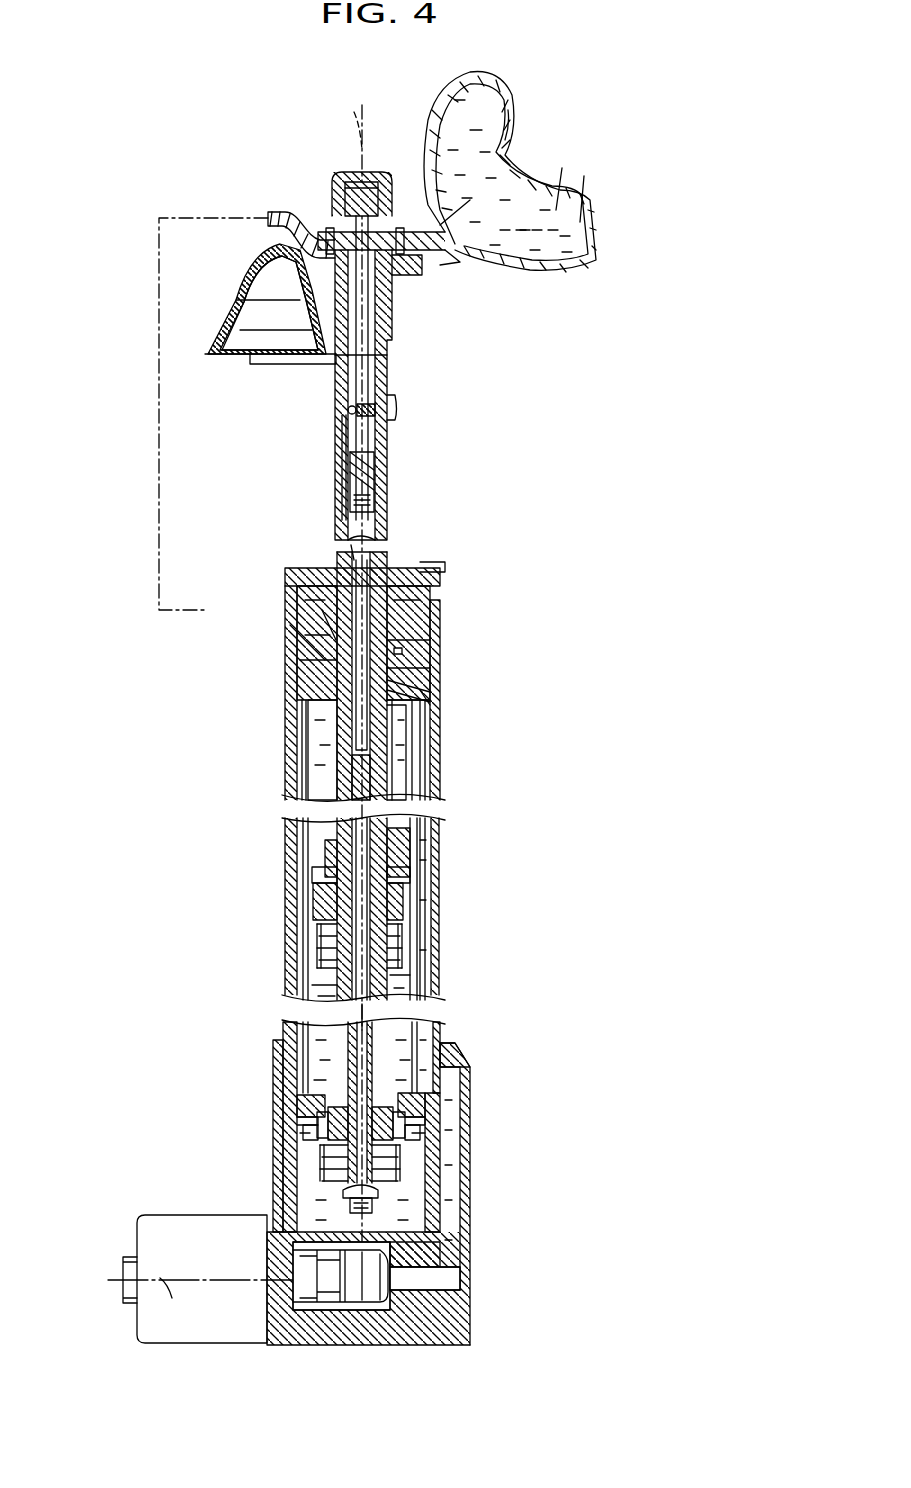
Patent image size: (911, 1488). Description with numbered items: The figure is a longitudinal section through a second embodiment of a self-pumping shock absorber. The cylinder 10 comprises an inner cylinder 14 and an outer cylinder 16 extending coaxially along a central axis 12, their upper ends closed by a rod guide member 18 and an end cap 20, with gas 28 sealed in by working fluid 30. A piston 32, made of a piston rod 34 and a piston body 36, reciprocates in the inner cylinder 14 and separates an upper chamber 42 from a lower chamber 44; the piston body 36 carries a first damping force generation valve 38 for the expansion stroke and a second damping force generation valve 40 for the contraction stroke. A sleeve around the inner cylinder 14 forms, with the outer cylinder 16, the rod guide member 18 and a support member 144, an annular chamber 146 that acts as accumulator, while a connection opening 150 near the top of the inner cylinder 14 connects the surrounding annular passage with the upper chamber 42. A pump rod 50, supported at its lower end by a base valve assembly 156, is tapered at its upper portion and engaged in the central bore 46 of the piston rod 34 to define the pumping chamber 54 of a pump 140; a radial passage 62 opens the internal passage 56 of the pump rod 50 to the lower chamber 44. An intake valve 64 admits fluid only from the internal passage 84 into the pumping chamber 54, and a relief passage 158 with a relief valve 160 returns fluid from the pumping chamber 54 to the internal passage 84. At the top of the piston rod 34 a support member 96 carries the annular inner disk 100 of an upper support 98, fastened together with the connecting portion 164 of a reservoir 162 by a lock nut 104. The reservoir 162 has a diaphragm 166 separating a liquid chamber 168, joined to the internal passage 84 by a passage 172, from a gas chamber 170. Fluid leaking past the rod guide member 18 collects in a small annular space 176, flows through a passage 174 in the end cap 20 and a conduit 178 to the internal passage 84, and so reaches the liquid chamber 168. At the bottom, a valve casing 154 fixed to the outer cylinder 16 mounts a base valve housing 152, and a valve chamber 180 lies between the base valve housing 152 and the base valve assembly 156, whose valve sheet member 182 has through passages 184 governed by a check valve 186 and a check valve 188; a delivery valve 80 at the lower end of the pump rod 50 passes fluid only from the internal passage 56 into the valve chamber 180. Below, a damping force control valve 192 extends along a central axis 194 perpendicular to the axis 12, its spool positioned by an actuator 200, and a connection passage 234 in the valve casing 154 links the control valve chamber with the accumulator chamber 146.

The cylinder 10 is at (268, 918).
The central axis 12 is at (351, 114).
The inner cylinder 14 is at (404, 728).
The outer cylinder 16 is at (400, 756).
The rod guide member 18 is at (286, 692).
The end cap 20 is at (446, 568).
The gas 28 is at (432, 786).
The working fluid 30 is at (425, 860).
The piston 32 is at (396, 838).
The piston rod 34 is at (385, 440).
The piston body 36 is at (416, 908).
The first damping force generation valve 38 is at (408, 934).
The second damping force generation valve 40 is at (328, 880).
The upper chamber 42 is at (420, 752).
The lower chamber 44 is at (404, 980).
The central bore 46 is at (375, 620).
The pump rod 50 is at (330, 776).
The pumping chamber 54 is at (342, 570).
The internal passage 56 is at (372, 1028).
The radial passage 62 is at (338, 980).
The intake valve 64 is at (374, 512).
The delivery valve 80 is at (448, 1242).
The internal passage 84 is at (350, 326).
The support member 96 is at (394, 312).
The upper support 98 is at (244, 284).
The annular inner disk 100 is at (268, 366).
The lock nut 104 is at (348, 178).
The pump 140 is at (436, 690).
The support member 144 is at (298, 1104).
The annular chamber 146 is at (300, 978).
The connection opening 150 is at (298, 738).
The base valve housing 152 is at (436, 1140).
The valve casing 154 is at (455, 1072).
The base valve assembly 156 is at (306, 1134).
The relief passage 158 is at (342, 445).
The relief valve 160 is at (348, 408).
The reservoir 162 is at (530, 282).
The connecting portion 164 is at (442, 262).
The diaphragm 166 is at (512, 126).
The liquid chamber 168 is at (427, 148).
The gas chamber 170 is at (533, 232).
The passage 172 is at (448, 232).
The passage 174 is at (292, 646).
The small annular space 176 is at (404, 656).
The conduit 178 is at (280, 212).
The valve chamber 180 is at (392, 1204).
The valve sheet member 182 is at (432, 1118).
The through passages 184 is at (318, 1122).
The check valve 186 is at (404, 1148).
The check valve 188 is at (326, 1095).
The damping force control valve 192 is at (390, 1318).
The central axis 194 is at (179, 1307).
The actuator 200 is at (164, 1228).
The connection passage 234 is at (452, 1268).